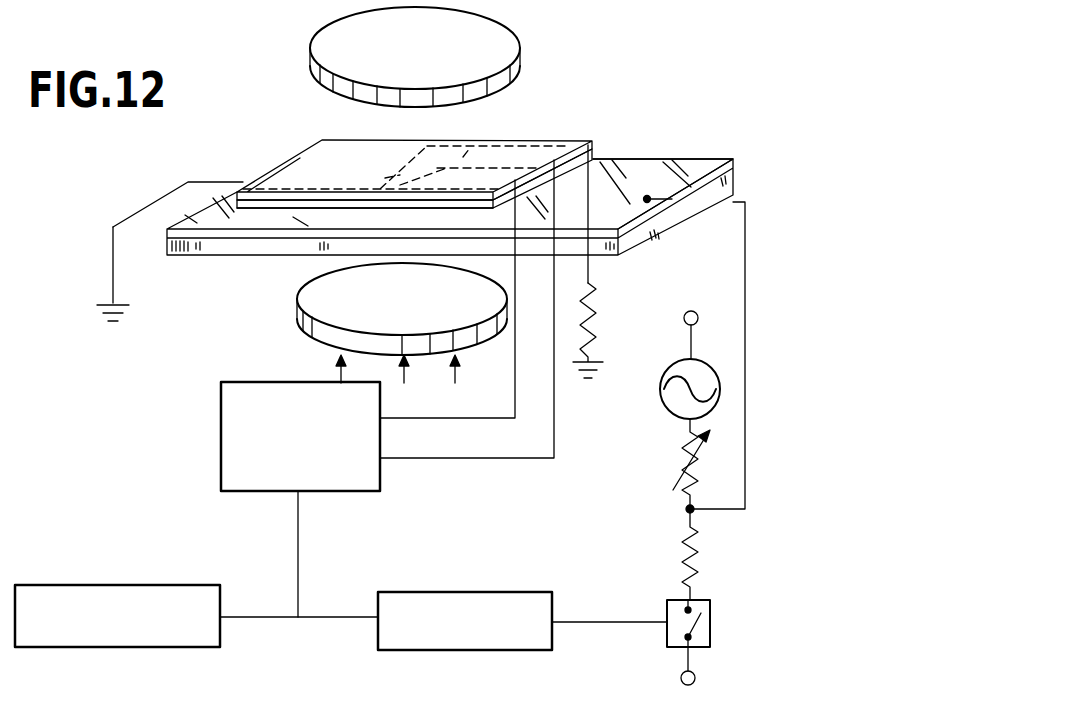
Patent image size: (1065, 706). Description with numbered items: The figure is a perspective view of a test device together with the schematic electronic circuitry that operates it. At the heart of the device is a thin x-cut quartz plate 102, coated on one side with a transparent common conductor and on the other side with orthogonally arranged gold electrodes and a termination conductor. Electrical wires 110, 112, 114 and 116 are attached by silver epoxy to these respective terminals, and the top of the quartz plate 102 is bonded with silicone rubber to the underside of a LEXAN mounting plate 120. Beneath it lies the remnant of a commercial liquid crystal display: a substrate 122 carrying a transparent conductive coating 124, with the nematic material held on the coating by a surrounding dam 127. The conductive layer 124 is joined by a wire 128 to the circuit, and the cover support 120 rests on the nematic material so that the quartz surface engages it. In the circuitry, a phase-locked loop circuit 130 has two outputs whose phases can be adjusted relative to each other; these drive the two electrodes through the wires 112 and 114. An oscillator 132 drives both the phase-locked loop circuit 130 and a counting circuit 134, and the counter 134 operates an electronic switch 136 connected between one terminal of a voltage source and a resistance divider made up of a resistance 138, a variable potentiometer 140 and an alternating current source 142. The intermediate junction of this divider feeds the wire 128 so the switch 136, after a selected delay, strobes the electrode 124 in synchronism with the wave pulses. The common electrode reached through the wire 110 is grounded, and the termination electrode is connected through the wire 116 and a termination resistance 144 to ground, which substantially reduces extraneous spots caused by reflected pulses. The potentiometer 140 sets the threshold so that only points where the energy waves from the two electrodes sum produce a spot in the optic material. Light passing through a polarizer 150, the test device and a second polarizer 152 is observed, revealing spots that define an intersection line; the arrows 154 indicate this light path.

The x-cut quartz plate 102 is at (400, 160).
The electrical wire 110 is at (113, 260).
The electrical wire 112 is at (554, 410).
The electrical wire 114 is at (515, 400).
The electrical wire 116 is at (588, 268).
The LEXAN mounting plate 120 is at (560, 143).
The substrate 122 is at (733, 182).
The transparent conductive coating 124 is at (680, 160).
The dam 127 is at (251, 208).
The wire 128 is at (746, 252).
The phase-locked loop circuit 130 is at (221, 383).
The oscillator 132 is at (105, 585).
The counting circuit 134 is at (547, 598).
The electronic switch 136 is at (712, 625).
The resistance 138 is at (700, 570).
The variable potentiometer 140 is at (673, 460).
The alternating current source 142 is at (661, 393).
The termination resistance 144 is at (602, 310).
The polarizer 150 is at (307, 307).
The polarizer 152 is at (497, 45).
The field direction arrows 154 is at (380, 370).